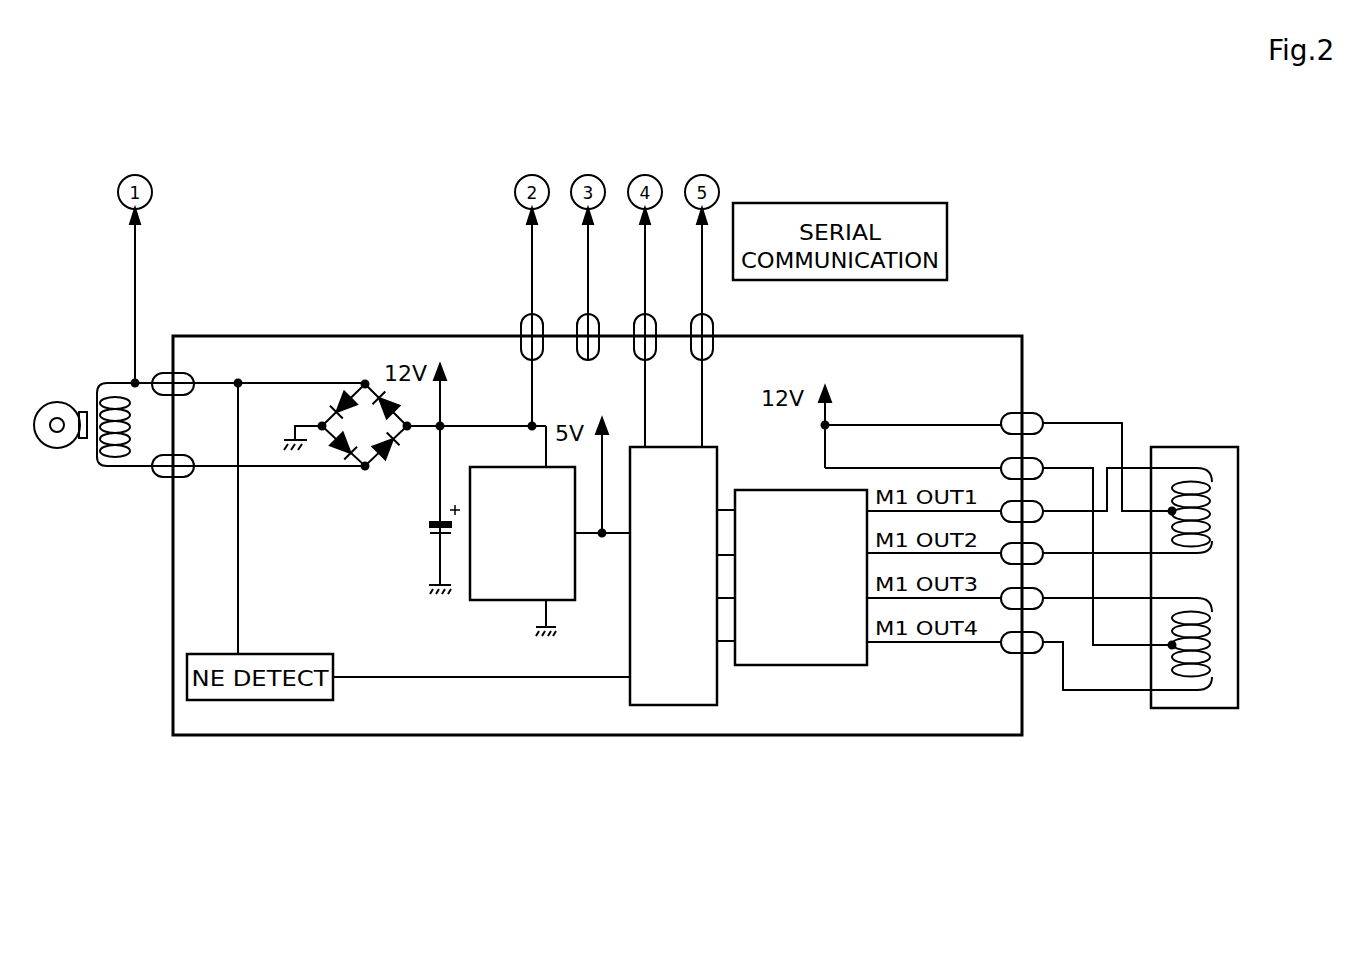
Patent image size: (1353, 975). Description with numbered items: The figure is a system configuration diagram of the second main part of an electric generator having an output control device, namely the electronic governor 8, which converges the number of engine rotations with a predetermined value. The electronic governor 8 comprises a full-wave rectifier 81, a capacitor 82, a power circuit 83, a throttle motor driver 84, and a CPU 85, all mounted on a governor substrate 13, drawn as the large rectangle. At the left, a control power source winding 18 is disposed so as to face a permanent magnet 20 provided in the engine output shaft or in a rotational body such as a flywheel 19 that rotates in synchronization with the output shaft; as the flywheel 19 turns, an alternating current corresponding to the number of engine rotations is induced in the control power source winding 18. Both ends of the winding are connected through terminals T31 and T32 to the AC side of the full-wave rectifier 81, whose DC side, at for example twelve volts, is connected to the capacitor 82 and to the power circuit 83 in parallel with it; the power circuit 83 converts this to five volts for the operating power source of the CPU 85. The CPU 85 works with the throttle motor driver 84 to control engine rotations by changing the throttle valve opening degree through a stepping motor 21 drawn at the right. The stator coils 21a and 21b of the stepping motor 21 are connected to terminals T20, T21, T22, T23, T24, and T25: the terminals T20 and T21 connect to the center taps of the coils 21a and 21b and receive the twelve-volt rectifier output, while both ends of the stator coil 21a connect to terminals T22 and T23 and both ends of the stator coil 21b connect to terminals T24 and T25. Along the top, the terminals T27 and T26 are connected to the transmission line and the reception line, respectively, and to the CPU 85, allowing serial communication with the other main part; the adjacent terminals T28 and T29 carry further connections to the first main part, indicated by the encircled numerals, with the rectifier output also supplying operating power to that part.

The electronic governor 8 is at (985, 328).
The governor substrate 13 is at (823, 737).
The control power source winding 18 is at (96, 452).
The rotational body (flywheel) 19 is at (57, 450).
The permanent magnet 20 is at (83, 410).
The stepping motor 21 is at (1229, 577).
The stator coil 21a is at (1212, 502).
The stator coil 21b is at (1212, 636).
The full-wave rectifier 81 is at (378, 470).
The capacitor 82 is at (432, 540).
The power circuit 83 is at (566, 603).
The throttle motor driver 84 is at (820, 666).
The CPU 85 is at (718, 694).
The terminal T20 is at (1034, 416).
The terminal T21 is at (1034, 460).
The terminal T22 is at (1034, 503).
The terminal T23 is at (1034, 546).
The terminal T24 is at (1034, 589).
The terminal T25 is at (1034, 633).
The terminal T26 is at (712, 318).
The terminal T27 is at (640, 318).
The terminal T28 is at (584, 318).
The terminal T29 is at (527, 318).
The terminal T31 is at (164, 372).
The terminal T32 is at (162, 479).